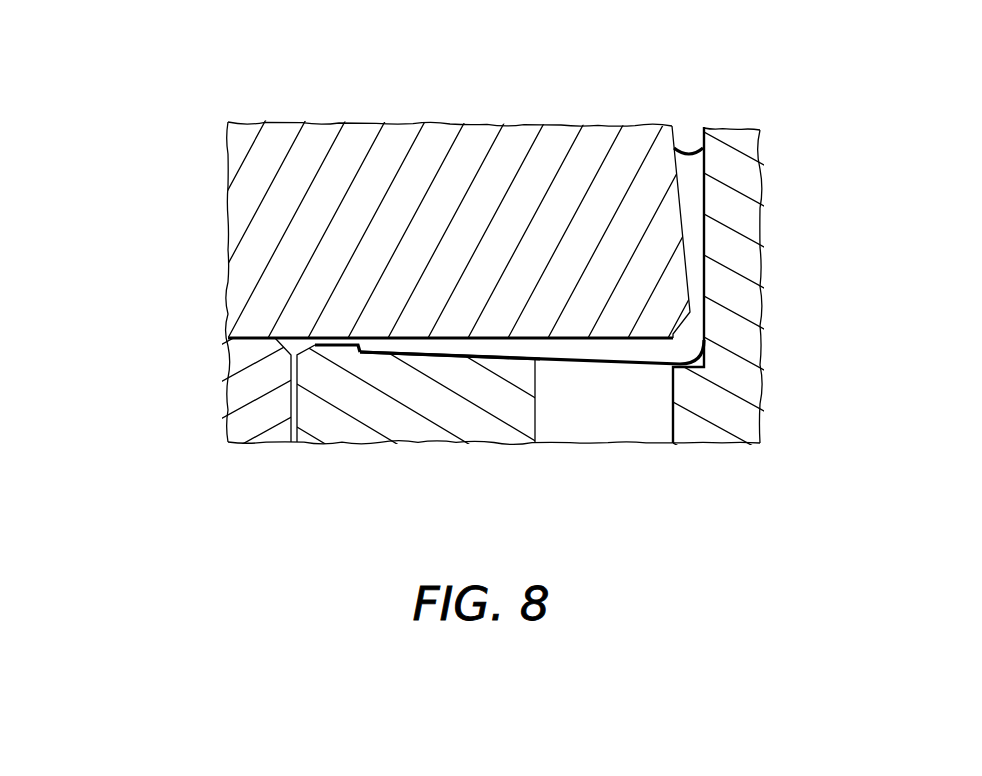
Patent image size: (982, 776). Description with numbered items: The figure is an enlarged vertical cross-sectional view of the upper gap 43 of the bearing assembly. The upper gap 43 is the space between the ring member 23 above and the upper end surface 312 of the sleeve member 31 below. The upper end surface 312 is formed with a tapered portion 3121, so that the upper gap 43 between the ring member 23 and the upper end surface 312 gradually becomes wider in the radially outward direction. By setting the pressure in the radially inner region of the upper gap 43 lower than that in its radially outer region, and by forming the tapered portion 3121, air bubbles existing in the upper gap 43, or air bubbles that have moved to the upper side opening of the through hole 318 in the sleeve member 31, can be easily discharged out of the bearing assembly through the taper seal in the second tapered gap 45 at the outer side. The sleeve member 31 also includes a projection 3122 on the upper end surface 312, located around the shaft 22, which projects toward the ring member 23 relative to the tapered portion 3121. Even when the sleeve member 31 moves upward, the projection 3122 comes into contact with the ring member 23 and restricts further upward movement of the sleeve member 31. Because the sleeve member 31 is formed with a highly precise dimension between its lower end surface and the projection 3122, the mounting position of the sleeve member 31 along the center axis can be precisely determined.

The ring member 23 is at (453, 182).
The upper gap 43 is at (525, 355).
The second tapered gap 45 is at (688, 138).
The sleeve member 31 is at (740, 305).
The shaft 22 is at (243, 400).
The upper end surface 312 is at (367, 360).
The tapered portion 3121 is at (339, 344).
The projection 3122 is at (451, 350).
The through hole 318 is at (606, 410).